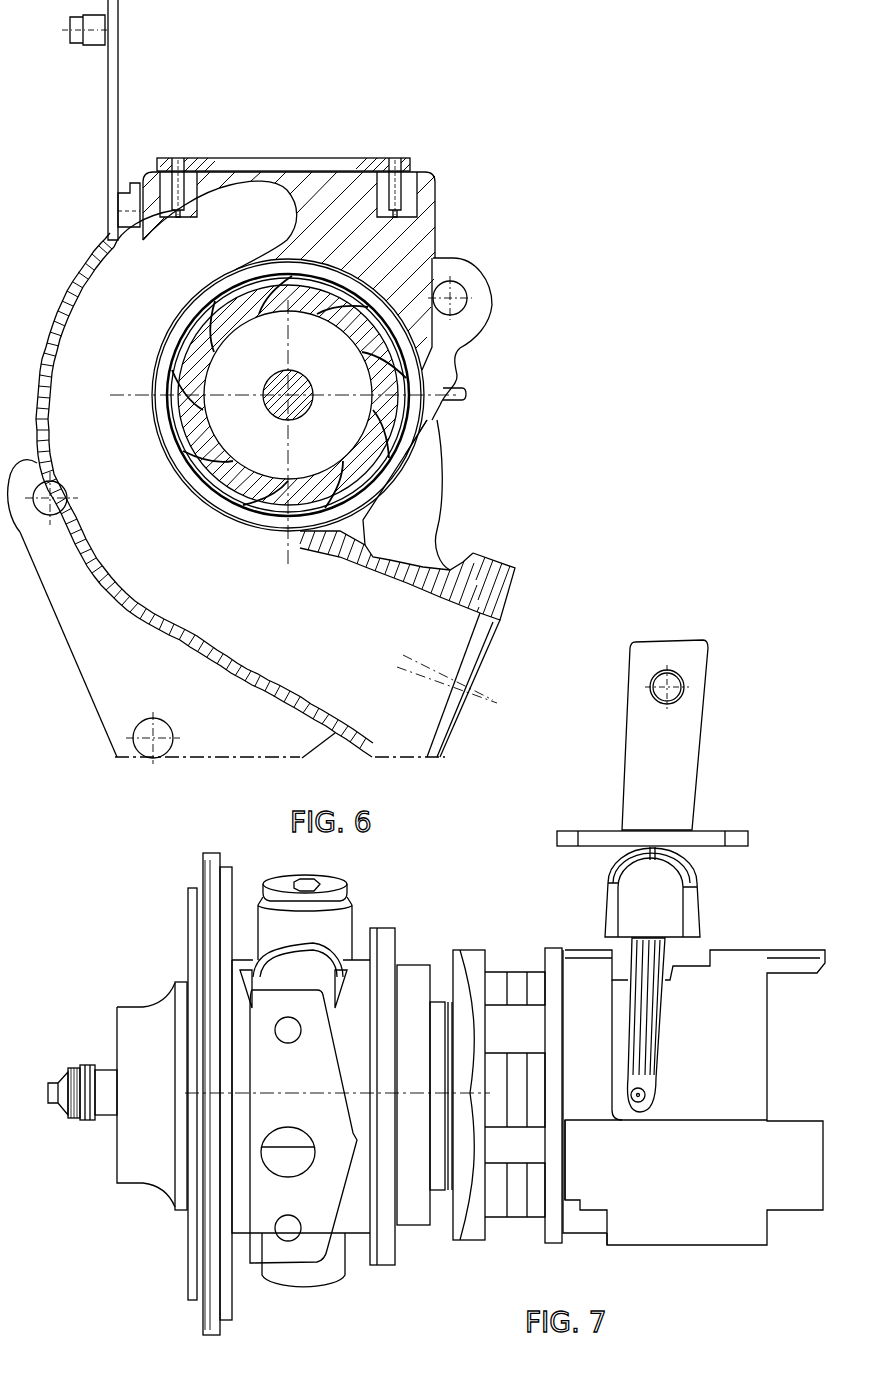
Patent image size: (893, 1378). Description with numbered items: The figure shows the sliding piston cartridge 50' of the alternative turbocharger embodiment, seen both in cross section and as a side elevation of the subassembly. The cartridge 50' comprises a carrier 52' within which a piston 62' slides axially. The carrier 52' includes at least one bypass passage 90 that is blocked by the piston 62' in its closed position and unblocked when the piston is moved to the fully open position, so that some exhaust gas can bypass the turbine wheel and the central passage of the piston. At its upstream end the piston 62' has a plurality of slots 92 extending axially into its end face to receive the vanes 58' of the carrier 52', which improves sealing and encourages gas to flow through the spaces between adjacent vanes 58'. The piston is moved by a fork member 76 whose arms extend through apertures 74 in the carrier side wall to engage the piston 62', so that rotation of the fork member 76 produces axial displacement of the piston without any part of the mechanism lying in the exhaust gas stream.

In FIG. 7, the sliding piston cartridge 50' is at (696, 793).
In FIG. 6, the carrier 52' is at (464, 466).
In FIG. 7, the carrier 52' is at (681, 1202).
In FIG. 7, the vanes 58' is at (485, 1091).
In FIG. 6, the piston 62' is at (240, 395).
In FIG. 7, the piston 62' is at (714, 1097).
In FIG. 7, the apertures 74 is at (713, 1073).
In FIG. 7, the fork member 76 is at (672, 1013).
In FIG. 6, the bypass passage 90 is at (157, 390).
In FIG. 6, the slots 92 is at (290, 487).
In FIG. 7, the slots 92 is at (530, 1043).